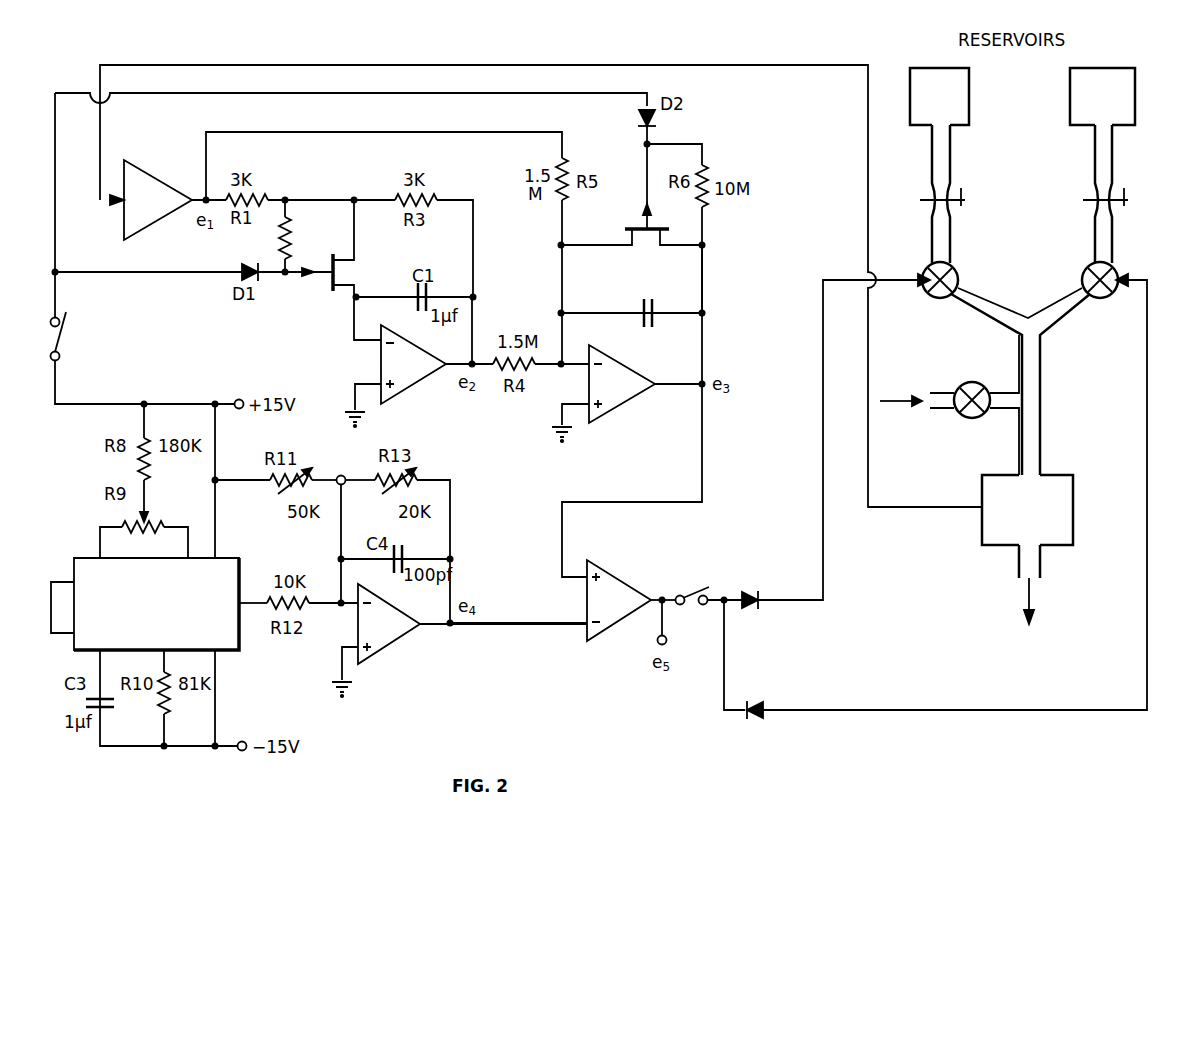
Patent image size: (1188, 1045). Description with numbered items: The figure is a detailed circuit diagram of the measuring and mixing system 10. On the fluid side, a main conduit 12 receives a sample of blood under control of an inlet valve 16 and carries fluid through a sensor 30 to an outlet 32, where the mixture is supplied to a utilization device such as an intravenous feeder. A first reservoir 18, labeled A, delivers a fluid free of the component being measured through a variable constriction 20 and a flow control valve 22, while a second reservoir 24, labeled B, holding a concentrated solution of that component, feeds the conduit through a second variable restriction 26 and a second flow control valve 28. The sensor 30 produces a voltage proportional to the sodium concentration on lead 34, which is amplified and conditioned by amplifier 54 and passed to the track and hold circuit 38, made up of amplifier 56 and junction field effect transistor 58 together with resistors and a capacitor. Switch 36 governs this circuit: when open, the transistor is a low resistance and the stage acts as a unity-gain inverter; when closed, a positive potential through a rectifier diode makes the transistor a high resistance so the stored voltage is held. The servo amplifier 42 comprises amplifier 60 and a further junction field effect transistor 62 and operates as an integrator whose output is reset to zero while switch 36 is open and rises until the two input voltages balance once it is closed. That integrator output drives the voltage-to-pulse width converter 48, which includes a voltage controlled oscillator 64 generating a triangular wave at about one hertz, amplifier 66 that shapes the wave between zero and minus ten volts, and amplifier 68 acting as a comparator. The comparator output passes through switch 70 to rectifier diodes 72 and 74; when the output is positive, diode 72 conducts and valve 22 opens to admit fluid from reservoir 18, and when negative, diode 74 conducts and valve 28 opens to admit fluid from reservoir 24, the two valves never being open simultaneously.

The measuring and mixing system 10 is at (500, 50).
The amplifier A1 54 is at (162, 186).
The track and hold circuit 38 is at (316, 190).
The junction field effect transistor Q1 58 is at (306, 292).
The amplifier A2 56 is at (422, 368).
The amplifier A3 60 is at (634, 394).
The junction field effect transistor Q2 62 is at (628, 218).
The servo amplifier 42 is at (710, 293).
The switch S1 36 is at (63, 332).
The voltage controlled oscillator 64 is at (234, 628).
The amplifier A4 66 is at (396, 632).
The voltage-to-pulse width converter 48 is at (630, 562).
The amplifier A5 68 is at (608, 624).
The switch S2 70 is at (693, 592).
The rectifier diode D3 72 is at (757, 594).
The rectifier diode D4 74 is at (757, 702).
The first reservoir A 18 is at (967, 108).
The second reservoir B 24 is at (1130, 108).
The variable constriction 20 is at (968, 204).
The second variable restriction 26 is at (1130, 204).
The flow control valve V1 22 is at (940, 300).
The second flow control valve V2 28 is at (1100, 300).
The inlet valve 16 is at (970, 416).
The main flow line or conduit 12 is at (1032, 434).
The sensor 30 is at (1060, 520).
The lead 34 is at (933, 508).
The outlet 32 is at (1039, 566).